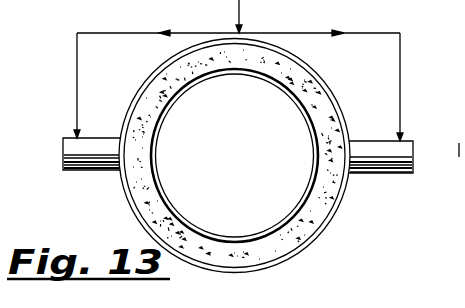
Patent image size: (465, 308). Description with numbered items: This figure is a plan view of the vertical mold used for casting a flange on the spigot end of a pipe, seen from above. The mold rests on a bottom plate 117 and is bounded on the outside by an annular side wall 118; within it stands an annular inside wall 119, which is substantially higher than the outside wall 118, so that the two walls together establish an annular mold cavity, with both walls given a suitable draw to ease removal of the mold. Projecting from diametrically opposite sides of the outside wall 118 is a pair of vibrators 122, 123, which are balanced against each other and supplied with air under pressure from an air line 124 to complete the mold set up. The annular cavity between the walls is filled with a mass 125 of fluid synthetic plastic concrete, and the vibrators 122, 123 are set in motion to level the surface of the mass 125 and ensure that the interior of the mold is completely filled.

The bottom plate 117 is at (235, 155).
The annular side wall 118 is at (317, 70).
The annular inside wall 119 is at (317, 143).
The vibrator 122 is at (78, 171).
The vibrator 123 is at (379, 174).
The air line 124 is at (242, 13).
The mass of fluid concrete 125 is at (320, 101).